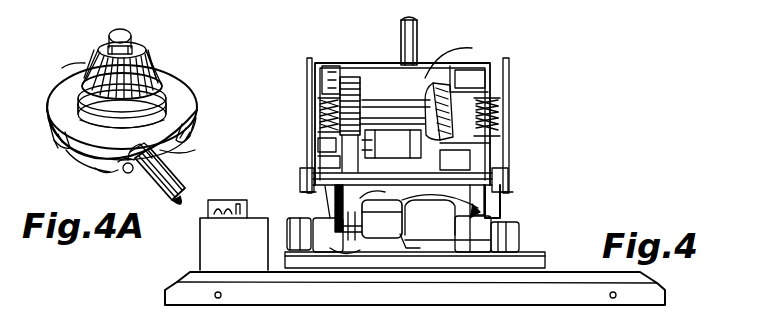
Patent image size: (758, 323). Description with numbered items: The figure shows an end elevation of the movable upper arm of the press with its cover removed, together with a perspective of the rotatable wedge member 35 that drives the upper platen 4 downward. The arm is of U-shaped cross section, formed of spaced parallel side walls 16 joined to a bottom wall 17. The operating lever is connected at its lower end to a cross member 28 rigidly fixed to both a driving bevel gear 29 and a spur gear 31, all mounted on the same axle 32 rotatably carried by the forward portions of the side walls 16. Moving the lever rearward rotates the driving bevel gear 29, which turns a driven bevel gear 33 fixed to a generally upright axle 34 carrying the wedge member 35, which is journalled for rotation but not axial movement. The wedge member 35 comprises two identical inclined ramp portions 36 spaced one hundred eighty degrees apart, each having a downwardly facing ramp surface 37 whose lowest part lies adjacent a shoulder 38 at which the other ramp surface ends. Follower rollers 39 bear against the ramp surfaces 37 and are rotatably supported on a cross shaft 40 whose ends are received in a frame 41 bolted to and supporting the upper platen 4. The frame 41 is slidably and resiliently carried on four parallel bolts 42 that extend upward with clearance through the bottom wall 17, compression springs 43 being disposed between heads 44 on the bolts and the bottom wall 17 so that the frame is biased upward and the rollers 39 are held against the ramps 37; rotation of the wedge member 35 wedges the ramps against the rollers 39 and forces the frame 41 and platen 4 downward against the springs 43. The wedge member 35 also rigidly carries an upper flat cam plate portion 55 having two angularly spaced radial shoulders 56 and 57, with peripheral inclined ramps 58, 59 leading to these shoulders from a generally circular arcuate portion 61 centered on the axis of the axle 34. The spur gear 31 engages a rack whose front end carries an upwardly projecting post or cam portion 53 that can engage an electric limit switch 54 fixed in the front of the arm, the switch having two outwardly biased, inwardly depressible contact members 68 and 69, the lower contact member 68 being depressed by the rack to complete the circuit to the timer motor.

In FIG. 4, the upper platen 4 is at (172, 288).
In FIG. 4, the side walls 16 is at (306, 82).
In FIG. 4, the bottom wall 17 is at (500, 182).
In FIG. 4, the cross member 28 is at (462, 42).
In FIG. 4, the driving bevel gear 29 is at (414, 54).
In FIG. 4, the spur gear 31 is at (364, 76).
In FIG. 4, the axle 32 is at (306, 110).
In FIG. 4A, the driven bevel gear 33 is at (150, 62).
In FIG. 4, the driven bevel gear 33 is at (428, 96).
In FIG. 4A, the upright axle 34 is at (128, 34).
In FIG. 4, the upright axle 34 is at (398, 135).
In FIG. 4A, the rotatable wedge member 35 is at (196, 78).
In FIG. 4, the rotatable wedge member 35 is at (322, 216).
In FIG. 4A, the inclined ramp portions 36 is at (100, 172).
In FIG. 4, the inclined ramp portions 36 is at (345, 249).
In FIG. 4A, the ramp surface 37 is at (95, 170).
In FIG. 4, the ramp surface 37 is at (452, 236).
In FIG. 4A, the shoulder 38 is at (126, 172).
In FIG. 4, the shoulder 38 is at (446, 217).
In FIG. 4A, the follower rollers 39 is at (170, 178).
In FIG. 4, the follower rollers 39 is at (508, 246).
In FIG. 4A, the cross shaft 40 is at (160, 205).
In FIG. 4, the cross shaft 40 is at (412, 236).
In FIG. 4, the frame 41 is at (528, 240).
In FIG. 4, the bolts 42 is at (308, 176).
In FIG. 4, the compression springs 43 is at (312, 142).
In FIG. 4, the heads 44 is at (338, 76).
In FIG. 4, the post or cam portion 53 is at (316, 160).
In FIG. 4, the limit switch 54 is at (375, 195).
In FIG. 4A, the cam plate portion 55 is at (66, 70).
In FIG. 4, the cam plate portion 55 is at (500, 160).
In FIG. 4A, the radial shoulder 56 is at (56, 138).
In FIG. 4A, the radial shoulder 57 is at (194, 130).
In FIG. 4A, the inclined ramp 58 is at (50, 108).
In FIG. 4A, the inclined ramp 59 is at (182, 152).
In FIG. 4A, the arcuate portion 61 is at (200, 95).
In FIG. 4, the lower contact member 68 is at (372, 220).
In FIG. 4, the contact member 69 is at (342, 208).